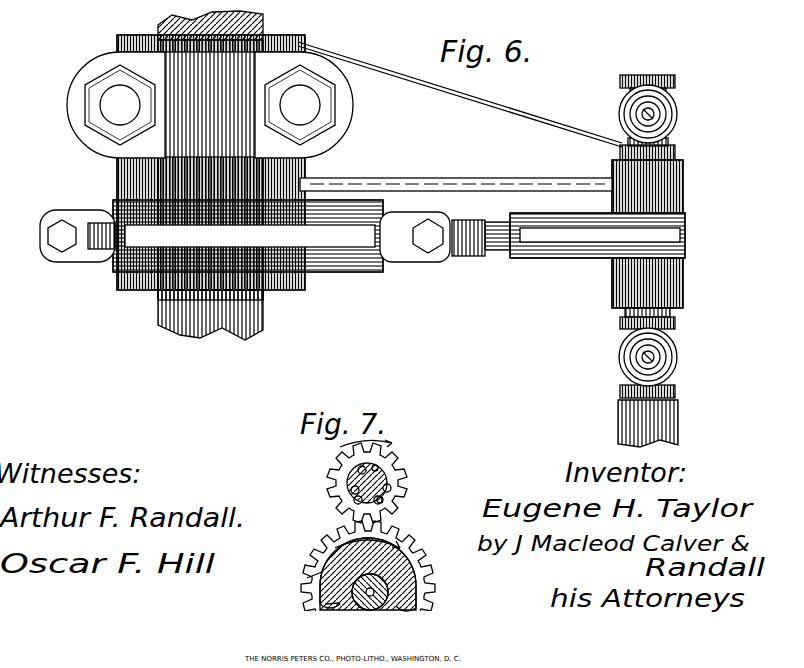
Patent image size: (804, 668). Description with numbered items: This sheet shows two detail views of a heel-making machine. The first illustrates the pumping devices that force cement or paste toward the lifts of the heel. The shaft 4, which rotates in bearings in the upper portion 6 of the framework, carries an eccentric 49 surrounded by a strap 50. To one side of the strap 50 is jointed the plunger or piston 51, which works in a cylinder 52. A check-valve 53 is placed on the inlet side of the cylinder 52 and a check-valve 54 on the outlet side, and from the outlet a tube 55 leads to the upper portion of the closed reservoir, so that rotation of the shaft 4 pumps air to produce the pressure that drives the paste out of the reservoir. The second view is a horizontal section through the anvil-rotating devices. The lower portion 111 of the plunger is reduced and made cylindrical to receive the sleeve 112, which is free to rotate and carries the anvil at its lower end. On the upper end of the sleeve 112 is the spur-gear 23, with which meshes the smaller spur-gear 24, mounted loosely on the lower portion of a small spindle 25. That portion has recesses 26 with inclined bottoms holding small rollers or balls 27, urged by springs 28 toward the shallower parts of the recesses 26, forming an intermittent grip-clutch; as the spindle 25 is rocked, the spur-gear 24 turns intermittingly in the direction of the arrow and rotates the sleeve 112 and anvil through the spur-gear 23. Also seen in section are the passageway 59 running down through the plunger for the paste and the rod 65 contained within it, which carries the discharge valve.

In FIG. 6, the shaft 4 is at (160, 308).
In FIG. 6, the upper portion of the framework 6 is at (286, 34).
In FIG. 6, the eccentric 49 is at (330, 273).
In FIG. 6, the strap 50 is at (396, 260).
In FIG. 6, the plunger or piston 51 is at (500, 256).
In FIG. 6, the cylinder 52 is at (580, 256).
In FIG. 6, the check-valve 53 is at (674, 100).
In FIG. 6, the check-valve 54 is at (676, 350).
In FIG. 6, the tube 55 is at (679, 421).
In FIG. 7, the spur-gear 23 is at (424, 570).
In FIG. 7, the smaller spur-gear 24 is at (396, 492).
In FIG. 7, the spindle 25 is at (350, 488).
In FIG. 7, the recesses 26 is at (358, 470).
In FIG. 7, the rollers or balls 27 is at (354, 502).
In FIG. 7, the springs 28 is at (378, 468).
In FIG. 7, the passageway 59 is at (390, 592).
In FIG. 7, the rod 65 is at (382, 580).
In FIG. 7, the lower portion of the plunger 111 is at (326, 604).
In FIG. 7, the sleeve 112 is at (308, 576).